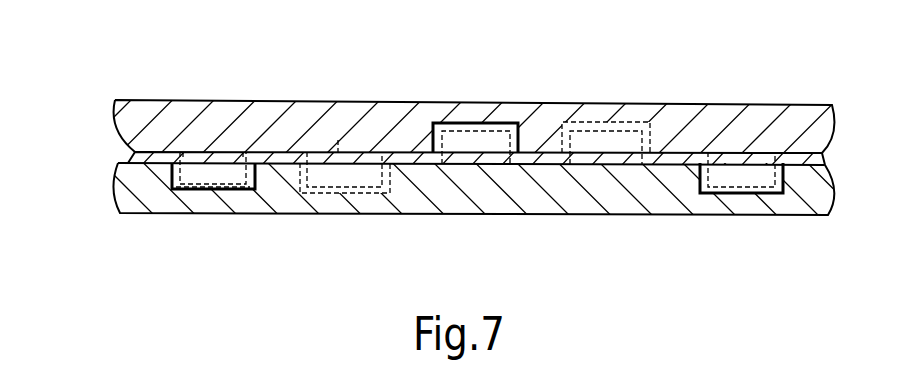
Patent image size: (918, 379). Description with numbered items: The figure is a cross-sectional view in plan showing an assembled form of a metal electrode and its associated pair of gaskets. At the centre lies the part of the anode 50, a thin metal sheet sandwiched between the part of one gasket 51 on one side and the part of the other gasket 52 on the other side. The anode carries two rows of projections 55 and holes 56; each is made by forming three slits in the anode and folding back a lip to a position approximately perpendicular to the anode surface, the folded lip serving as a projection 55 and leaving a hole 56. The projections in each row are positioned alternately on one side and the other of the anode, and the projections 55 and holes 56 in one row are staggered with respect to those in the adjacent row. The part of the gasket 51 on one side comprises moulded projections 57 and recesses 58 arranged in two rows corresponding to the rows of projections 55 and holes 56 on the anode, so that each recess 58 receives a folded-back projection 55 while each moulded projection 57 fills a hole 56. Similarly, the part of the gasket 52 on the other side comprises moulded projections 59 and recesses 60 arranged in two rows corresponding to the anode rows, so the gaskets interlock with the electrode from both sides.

The part of the anode 50 is at (128, 156).
The part of gasket 51 is at (117, 197).
The part of gasket 52 is at (116, 121).
The projection 55 is at (513, 123).
The hole 56 is at (210, 152).
The moulded projection 57 is at (470, 135).
The recess 58 is at (169, 189).
The moulded projection 59 is at (196, 172).
The recess 60 is at (438, 123).